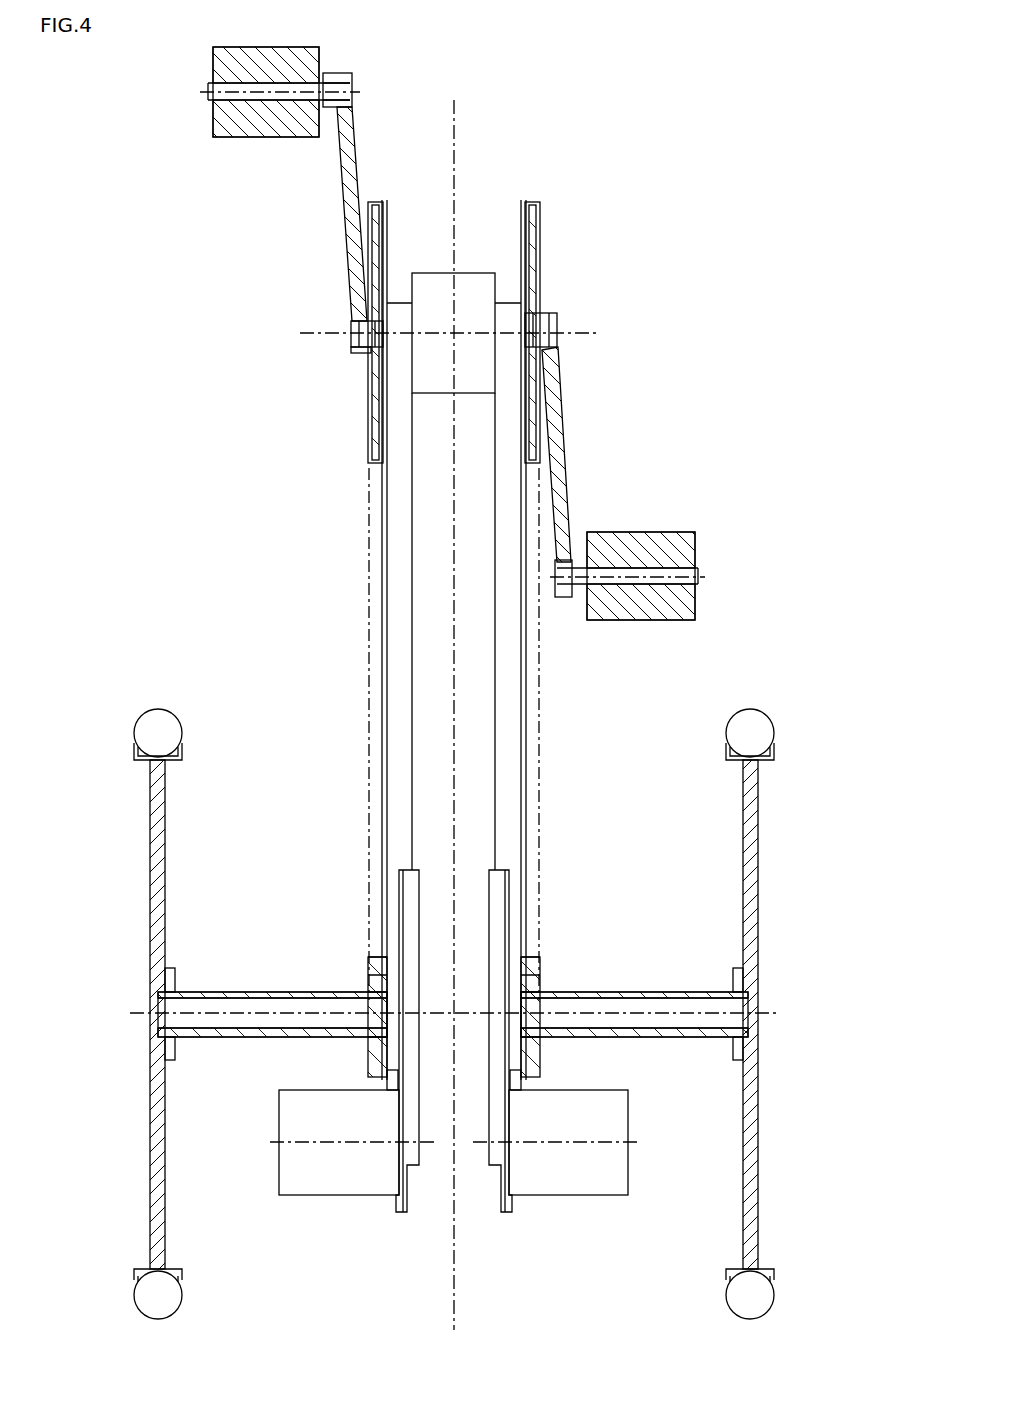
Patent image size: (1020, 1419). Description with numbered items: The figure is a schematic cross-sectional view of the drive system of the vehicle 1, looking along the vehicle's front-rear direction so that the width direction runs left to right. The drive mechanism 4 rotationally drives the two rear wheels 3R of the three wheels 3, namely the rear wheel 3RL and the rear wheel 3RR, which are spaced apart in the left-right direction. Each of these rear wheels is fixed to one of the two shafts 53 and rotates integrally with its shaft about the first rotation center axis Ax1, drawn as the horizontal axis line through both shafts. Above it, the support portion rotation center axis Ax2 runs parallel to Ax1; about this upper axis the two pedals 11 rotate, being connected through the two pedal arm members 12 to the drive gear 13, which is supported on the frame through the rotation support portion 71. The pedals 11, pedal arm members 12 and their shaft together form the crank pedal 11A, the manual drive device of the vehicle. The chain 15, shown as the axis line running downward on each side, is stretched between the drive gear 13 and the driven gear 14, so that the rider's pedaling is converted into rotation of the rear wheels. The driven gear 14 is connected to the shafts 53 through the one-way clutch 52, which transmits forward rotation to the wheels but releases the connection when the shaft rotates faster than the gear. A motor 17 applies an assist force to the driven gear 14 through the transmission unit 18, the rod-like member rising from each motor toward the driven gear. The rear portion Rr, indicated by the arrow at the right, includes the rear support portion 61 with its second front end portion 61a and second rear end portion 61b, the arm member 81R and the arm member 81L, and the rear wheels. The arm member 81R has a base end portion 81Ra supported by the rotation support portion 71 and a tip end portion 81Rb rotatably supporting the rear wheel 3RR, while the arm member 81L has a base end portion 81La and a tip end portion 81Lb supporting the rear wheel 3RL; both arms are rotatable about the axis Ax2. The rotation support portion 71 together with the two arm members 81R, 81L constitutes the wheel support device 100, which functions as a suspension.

The vehicle 1 is at (606, 92).
The wheels 3 is at (449, 994).
The rear wheels 3R is at (449, 994).
The rear wheel (left, second rear wheel) 3RL is at (157, 708).
The rear wheel (right, first rear wheel) 3RR is at (750, 708).
The drive mechanism 4 is at (491, 335).
The pedals 11 is at (452, 312).
The crank pedal 11A is at (613, 531).
The pedal arm members 12 is at (561, 408).
The drive gear 13 is at (372, 432).
The driven gear 14 is at (371, 972).
The chain 15 is at (368, 722).
The motor 17 is at (333, 1197).
The transmission unit 18 is at (410, 1214).
The one-way clutch 52 is at (371, 990).
The shafts 53 is at (197, 991).
The rear support portion 61 is at (508, 811).
The second front end portion 61a is at (390, 300).
The second rear end portion 61b is at (393, 1065).
The rotation support portion 71 is at (467, 515).
The wheel support device 100 is at (470, 272).
The arm member (left) 81L is at (398, 681).
The arm member (right) 81R is at (510, 681).
The base end portion 81La is at (370, 326).
The base end portion 81Ra is at (512, 310).
The tip end portion 81Lb is at (368, 1059).
The tip end portion 81Rb is at (540, 1059).
The first rotation center axis Ax1 is at (140, 1010).
The support portion rotation center axis Ax2 is at (325, 333).
The rear portion Rr is at (760, 1155).